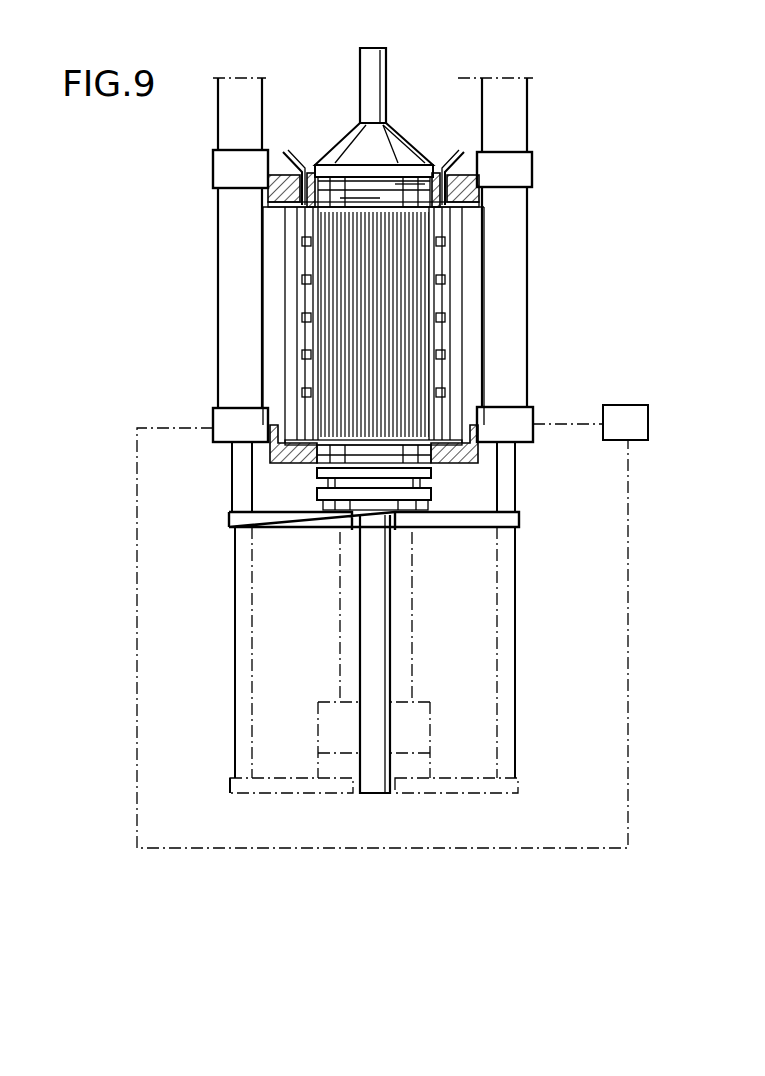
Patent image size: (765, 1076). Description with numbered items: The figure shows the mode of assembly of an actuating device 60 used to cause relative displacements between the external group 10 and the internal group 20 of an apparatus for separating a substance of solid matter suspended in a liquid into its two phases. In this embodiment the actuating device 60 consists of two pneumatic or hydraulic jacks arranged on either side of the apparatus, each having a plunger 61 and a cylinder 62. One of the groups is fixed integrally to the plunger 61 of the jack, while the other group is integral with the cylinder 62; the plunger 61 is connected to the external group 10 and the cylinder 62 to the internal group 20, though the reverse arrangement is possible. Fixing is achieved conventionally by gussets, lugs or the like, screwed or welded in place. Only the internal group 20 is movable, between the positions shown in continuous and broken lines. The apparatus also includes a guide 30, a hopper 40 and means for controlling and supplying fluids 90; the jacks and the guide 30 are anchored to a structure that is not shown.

The external group 10 is at (466, 306).
The internal group 20 is at (397, 156).
The guide 30 is at (392, 62).
The hopper 40 is at (300, 146).
The actuating device 60 is at (210, 340).
The plunger 61 is at (218, 256).
The cylinder 62 is at (240, 481).
The means for controlling and supplying fluids 90 is at (624, 418).